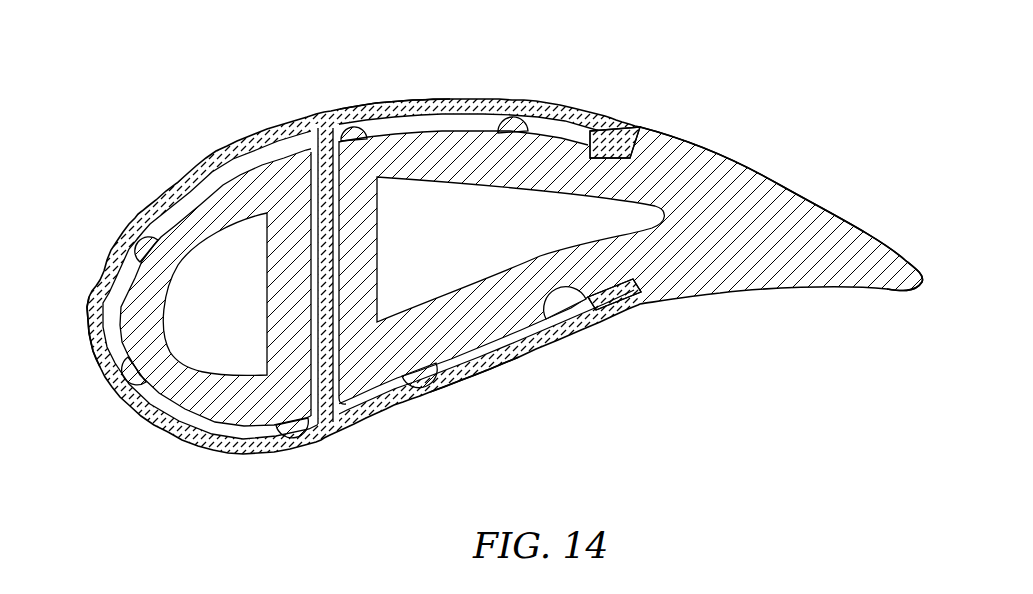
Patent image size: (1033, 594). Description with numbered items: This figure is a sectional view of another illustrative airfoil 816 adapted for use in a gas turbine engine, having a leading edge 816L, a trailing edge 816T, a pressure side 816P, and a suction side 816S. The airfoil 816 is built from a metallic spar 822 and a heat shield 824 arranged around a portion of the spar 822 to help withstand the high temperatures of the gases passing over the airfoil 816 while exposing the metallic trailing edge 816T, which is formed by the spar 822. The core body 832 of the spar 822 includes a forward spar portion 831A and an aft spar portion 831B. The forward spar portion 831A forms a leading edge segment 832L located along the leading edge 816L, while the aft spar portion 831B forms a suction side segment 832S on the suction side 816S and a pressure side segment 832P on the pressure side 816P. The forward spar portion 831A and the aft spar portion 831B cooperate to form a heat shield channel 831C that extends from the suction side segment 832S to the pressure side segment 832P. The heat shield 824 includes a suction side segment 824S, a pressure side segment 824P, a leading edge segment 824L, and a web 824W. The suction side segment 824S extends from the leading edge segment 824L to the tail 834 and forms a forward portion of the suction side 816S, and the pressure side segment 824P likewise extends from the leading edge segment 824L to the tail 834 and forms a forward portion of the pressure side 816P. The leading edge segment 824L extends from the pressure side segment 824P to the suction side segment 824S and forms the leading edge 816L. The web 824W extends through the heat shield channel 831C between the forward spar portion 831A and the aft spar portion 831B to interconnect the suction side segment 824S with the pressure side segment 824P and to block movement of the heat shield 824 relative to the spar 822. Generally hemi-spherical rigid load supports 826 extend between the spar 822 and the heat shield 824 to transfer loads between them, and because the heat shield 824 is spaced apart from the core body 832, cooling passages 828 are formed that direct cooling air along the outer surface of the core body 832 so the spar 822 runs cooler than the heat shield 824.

The airfoil 816 is at (113, 130).
The suction side 816S is at (386, 99).
The pressure side 816P is at (480, 378).
The leading edge 816L is at (89, 376).
The trailing edge 816T is at (928, 277).
The spar 822 is at (482, 130).
The heat shield 824 is at (285, 443).
The suction side segment 824S is at (530, 103).
The pressure side segment 824P is at (517, 348).
The leading edge segment 824L is at (117, 393).
The web 824W is at (343, 349).
The rigid load supports 826 is at (514, 139).
The cooling passages 828 is at (208, 183).
The forward spar portion 831A is at (272, 188).
The aft spar portion 831B is at (421, 141).
The heat shield channel 831C is at (321, 146).
The core body 832 is at (193, 386).
The leading edge segment 832L is at (116, 340).
The suction side segment 832S is at (611, 146).
The pressure side segment 832P is at (541, 306).
The tail 834 is at (818, 156).